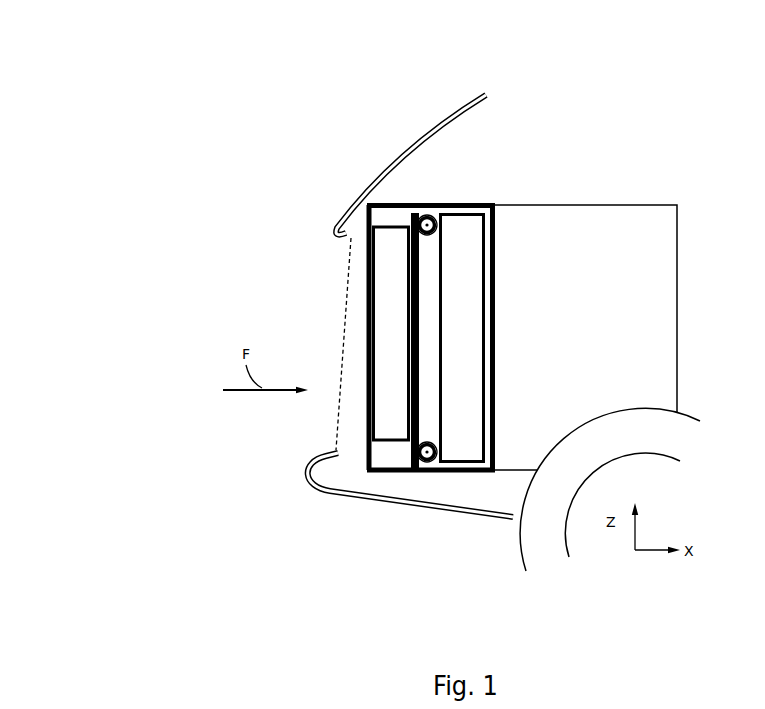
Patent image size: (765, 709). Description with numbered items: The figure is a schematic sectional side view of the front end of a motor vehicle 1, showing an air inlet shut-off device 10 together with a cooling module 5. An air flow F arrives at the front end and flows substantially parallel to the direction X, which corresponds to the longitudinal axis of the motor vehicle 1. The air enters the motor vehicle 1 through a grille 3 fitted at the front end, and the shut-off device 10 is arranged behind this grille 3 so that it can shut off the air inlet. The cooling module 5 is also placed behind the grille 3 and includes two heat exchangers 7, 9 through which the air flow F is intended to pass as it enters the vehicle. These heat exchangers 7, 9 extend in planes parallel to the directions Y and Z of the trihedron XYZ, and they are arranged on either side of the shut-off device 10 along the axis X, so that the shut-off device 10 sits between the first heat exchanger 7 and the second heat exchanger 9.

The motor vehicle 1 is at (414, 86).
The grille 3 is at (324, 421).
The cooling module 5 is at (421, 196).
The heat exchanger 7 is at (360, 321).
The heat exchanger 9 is at (464, 211).
The shut-off device 10 is at (412, 474).